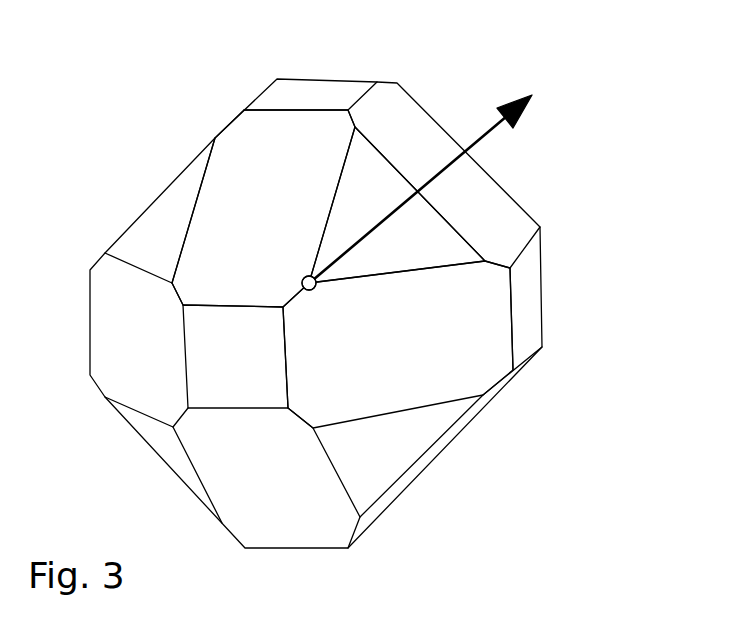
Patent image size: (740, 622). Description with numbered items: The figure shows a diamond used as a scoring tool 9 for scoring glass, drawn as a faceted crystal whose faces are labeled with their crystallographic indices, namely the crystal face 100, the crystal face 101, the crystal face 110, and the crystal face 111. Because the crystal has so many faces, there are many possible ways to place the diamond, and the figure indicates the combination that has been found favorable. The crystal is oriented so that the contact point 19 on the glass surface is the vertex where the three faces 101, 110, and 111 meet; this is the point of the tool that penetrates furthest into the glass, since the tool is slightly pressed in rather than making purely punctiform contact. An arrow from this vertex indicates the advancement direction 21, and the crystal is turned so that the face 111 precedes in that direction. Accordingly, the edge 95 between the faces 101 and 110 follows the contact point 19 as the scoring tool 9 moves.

The scoring tool 9 is at (530, 145).
The contact point 19 is at (304, 277).
The advancement direction 21 is at (481, 134).
The edge 95 is at (302, 281).
The crystal face 100 is at (235, 356).
The crystal face 101 is at (263, 208).
The crystal face 110 is at (398, 344).
The crystal face 111 is at (397, 205).